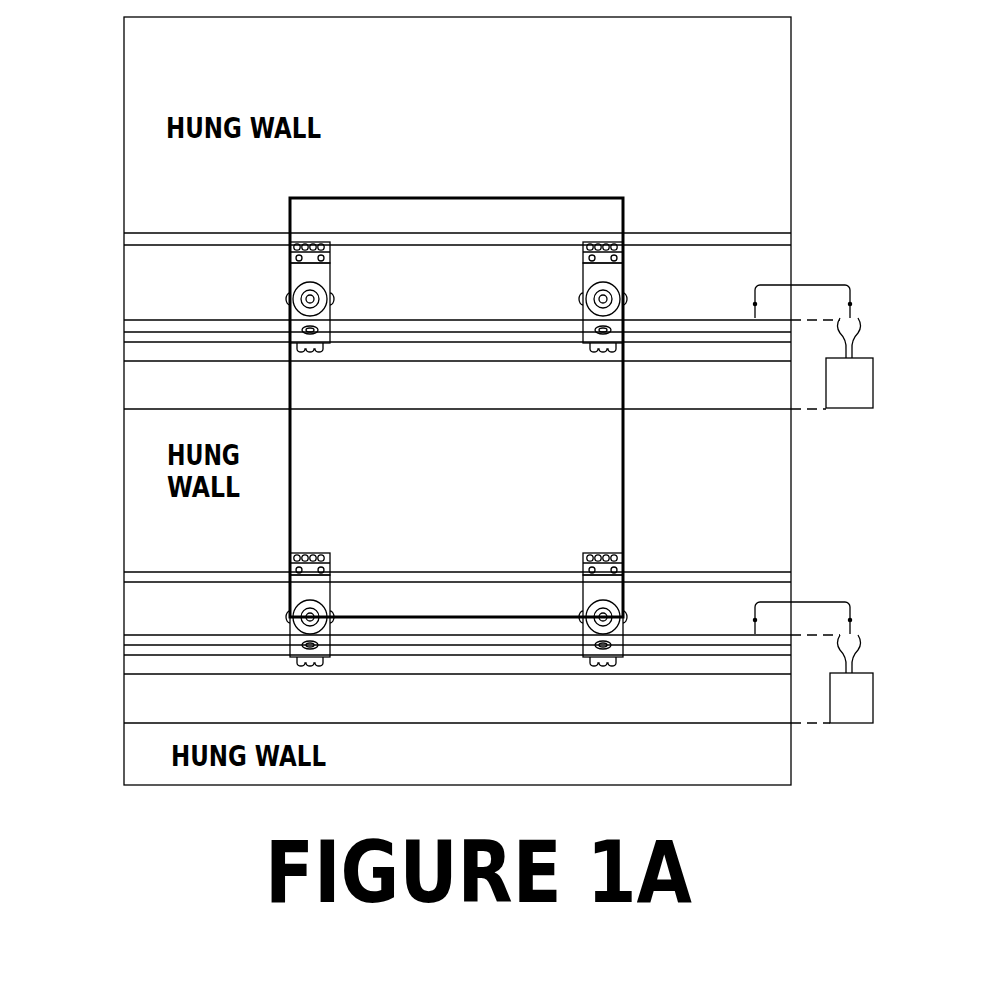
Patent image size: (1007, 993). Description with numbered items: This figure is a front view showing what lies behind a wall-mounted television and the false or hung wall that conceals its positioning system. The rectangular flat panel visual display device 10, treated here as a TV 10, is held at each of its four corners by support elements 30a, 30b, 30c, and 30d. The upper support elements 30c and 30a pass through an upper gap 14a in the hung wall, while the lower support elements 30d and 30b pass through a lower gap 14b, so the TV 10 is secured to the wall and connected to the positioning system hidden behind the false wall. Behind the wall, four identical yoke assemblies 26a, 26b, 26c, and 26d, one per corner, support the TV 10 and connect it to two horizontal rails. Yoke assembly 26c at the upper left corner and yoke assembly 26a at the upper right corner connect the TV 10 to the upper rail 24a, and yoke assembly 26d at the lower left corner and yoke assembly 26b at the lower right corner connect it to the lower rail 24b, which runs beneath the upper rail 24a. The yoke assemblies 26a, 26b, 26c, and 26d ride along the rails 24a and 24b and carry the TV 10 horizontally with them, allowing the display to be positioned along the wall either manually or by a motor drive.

The flat panel visual display device 10 is at (487, 516).
The gap 14a is at (794, 232).
The gap 14b is at (794, 571).
The upper rail 24a is at (275, 406).
The lower rail 24b is at (275, 715).
The yoke assembly 26a is at (607, 269).
The yoke assembly 26b is at (610, 588).
The yoke assembly 26c is at (300, 269).
The yoke assembly 26d is at (300, 590).
The support element 30a is at (703, 209).
The support element 30b is at (703, 556).
The support element 30c is at (318, 240).
The support element 30d is at (300, 573).